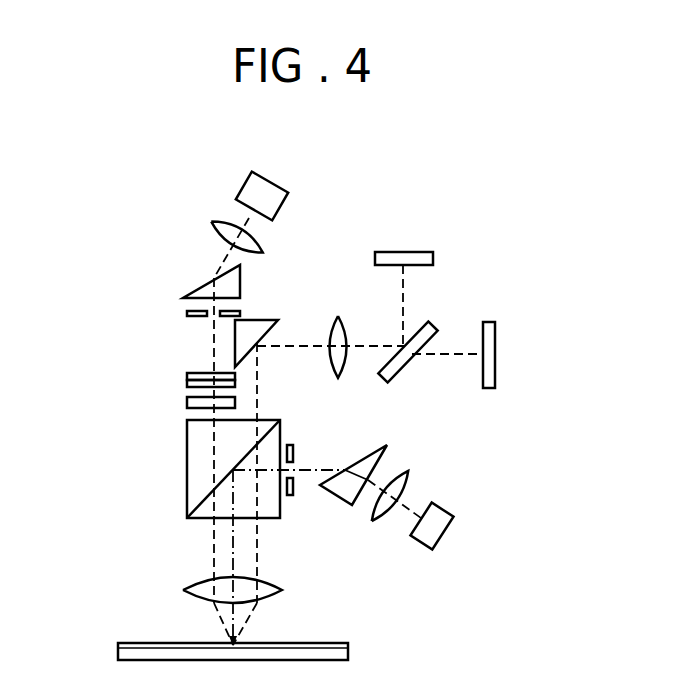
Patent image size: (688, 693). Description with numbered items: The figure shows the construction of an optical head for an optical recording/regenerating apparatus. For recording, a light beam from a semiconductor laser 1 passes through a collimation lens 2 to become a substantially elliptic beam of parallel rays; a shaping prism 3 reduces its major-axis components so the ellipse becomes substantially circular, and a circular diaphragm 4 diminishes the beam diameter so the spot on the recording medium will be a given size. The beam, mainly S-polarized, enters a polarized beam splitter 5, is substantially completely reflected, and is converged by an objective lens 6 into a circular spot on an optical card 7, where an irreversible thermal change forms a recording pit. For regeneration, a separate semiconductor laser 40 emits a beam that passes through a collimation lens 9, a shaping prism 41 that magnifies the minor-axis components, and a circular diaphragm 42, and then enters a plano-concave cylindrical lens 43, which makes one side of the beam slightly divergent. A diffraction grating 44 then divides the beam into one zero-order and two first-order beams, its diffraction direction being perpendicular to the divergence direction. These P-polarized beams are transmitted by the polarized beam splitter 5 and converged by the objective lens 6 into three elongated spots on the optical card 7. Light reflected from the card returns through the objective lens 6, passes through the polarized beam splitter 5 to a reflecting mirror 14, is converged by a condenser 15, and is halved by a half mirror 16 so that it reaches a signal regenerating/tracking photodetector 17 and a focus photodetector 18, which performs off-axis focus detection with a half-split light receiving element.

The semiconductor laser 1 is at (455, 519).
The collimation lens 2 is at (405, 472).
The shaping prism 3 is at (370, 448).
The circular diaphragm 4 is at (295, 453).
The polarized beam splitter 5 is at (187, 455).
The objective lens 6 is at (190, 585).
The optical card 7 is at (143, 643).
The collimation lens 9 is at (212, 224).
The reflecting mirror 14 is at (268, 320).
The condenser 15 is at (338, 316).
The half mirror 16 is at (423, 325).
The signal regenerating/tracking photodetector 17 is at (497, 343).
The focus photodetector 18 is at (422, 252).
The semiconductor laser 40 is at (244, 184).
The shaping prism 41 is at (197, 288).
The circular diaphragm 42 is at (186, 313).
The plano-concave cylindrical lens 43 is at (188, 374).
The diffraction grating 44 is at (188, 399).